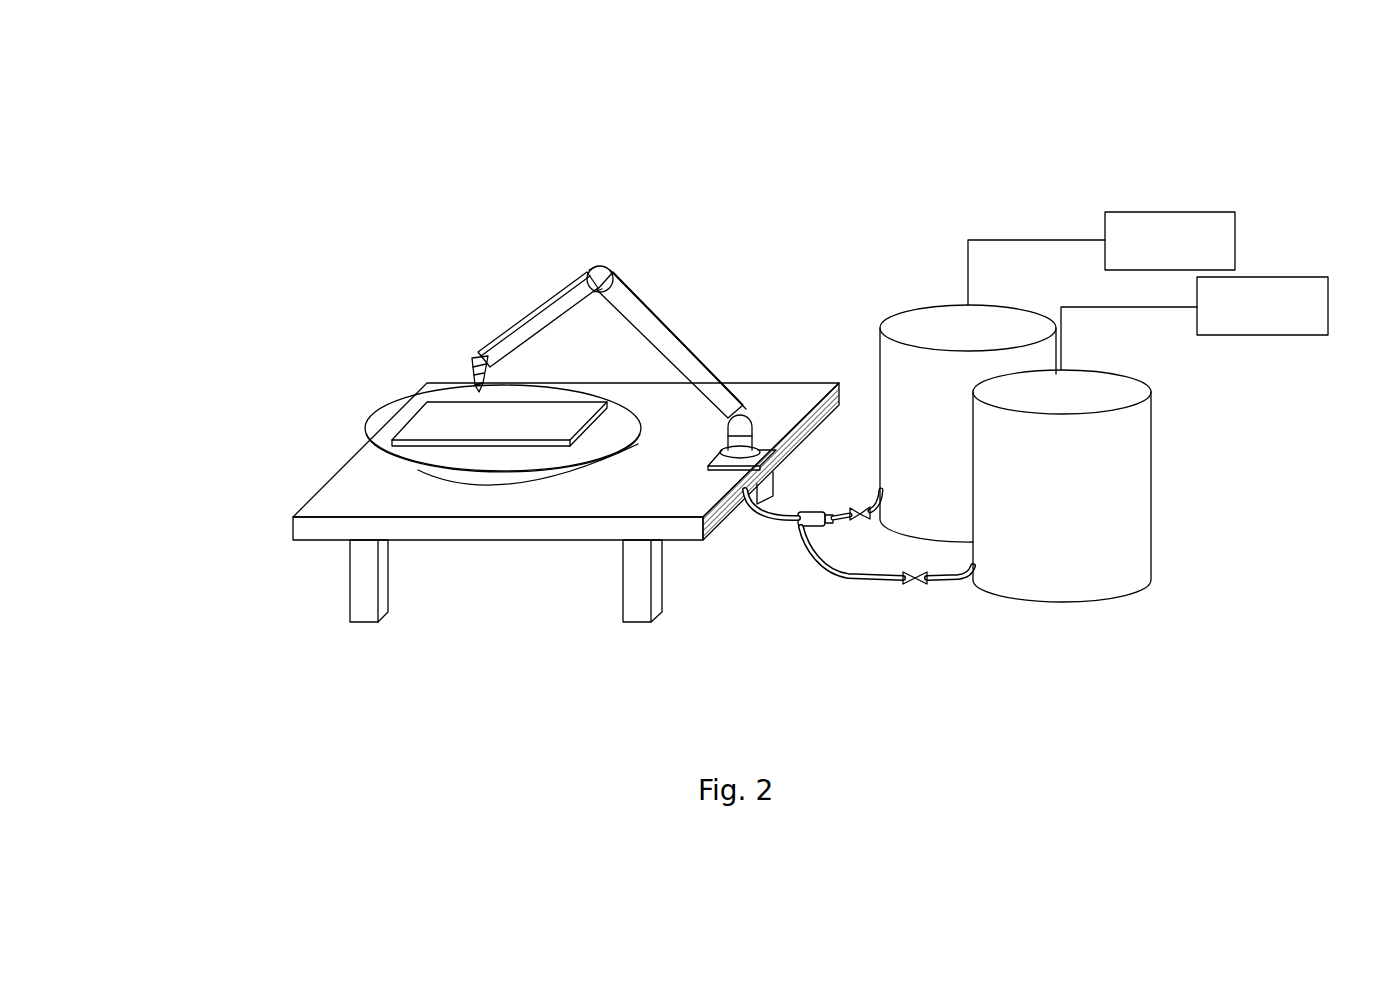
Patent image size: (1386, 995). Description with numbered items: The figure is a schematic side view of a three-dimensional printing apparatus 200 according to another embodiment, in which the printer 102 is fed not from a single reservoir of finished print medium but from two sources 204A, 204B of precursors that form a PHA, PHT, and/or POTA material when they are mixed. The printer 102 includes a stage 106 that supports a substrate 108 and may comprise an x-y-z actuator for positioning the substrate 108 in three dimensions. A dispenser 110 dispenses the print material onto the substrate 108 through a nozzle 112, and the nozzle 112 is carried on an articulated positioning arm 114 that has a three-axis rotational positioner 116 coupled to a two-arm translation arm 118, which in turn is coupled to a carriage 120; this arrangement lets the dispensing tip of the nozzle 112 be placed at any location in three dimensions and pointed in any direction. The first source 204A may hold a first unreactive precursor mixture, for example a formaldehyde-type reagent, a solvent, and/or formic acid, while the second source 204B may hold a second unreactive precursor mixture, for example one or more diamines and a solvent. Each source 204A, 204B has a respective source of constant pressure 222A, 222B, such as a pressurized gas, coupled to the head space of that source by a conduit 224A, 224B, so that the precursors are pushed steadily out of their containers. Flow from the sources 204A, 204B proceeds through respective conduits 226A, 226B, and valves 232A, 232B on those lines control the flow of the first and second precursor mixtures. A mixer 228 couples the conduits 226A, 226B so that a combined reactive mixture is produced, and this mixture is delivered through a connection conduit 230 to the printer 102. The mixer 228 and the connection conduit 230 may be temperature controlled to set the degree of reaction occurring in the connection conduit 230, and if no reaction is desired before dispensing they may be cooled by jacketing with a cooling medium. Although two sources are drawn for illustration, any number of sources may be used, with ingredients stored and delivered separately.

The 3D printer 102 is at (390, 355).
The stage 106 is at (365, 428).
The substrate 108 is at (468, 410).
The dispenser 110 is at (523, 298).
The nozzle 112 is at (503, 372).
The articulated positioning arm 114 is at (663, 310).
The 3-axis rotational positioner 116 is at (470, 343).
The two-arm translation arm 118 is at (592, 268).
The carriage 120 is at (768, 433).
The 3D printing apparatus 200 is at (685, 237).
The first source 204A is at (913, 320).
The second source 204B is at (1157, 432).
The source of constant pressure 222A is at (1127, 212).
The source of constant pressure 222B is at (1257, 276).
The conduit 224A is at (1018, 228).
The conduit 224B is at (1130, 314).
The conduit 226A is at (836, 511).
The conduit 226B is at (837, 581).
The mixer 228 is at (797, 524).
The connection conduit 230 is at (762, 526).
The valve 232A is at (858, 518).
The valve 232B is at (920, 590).